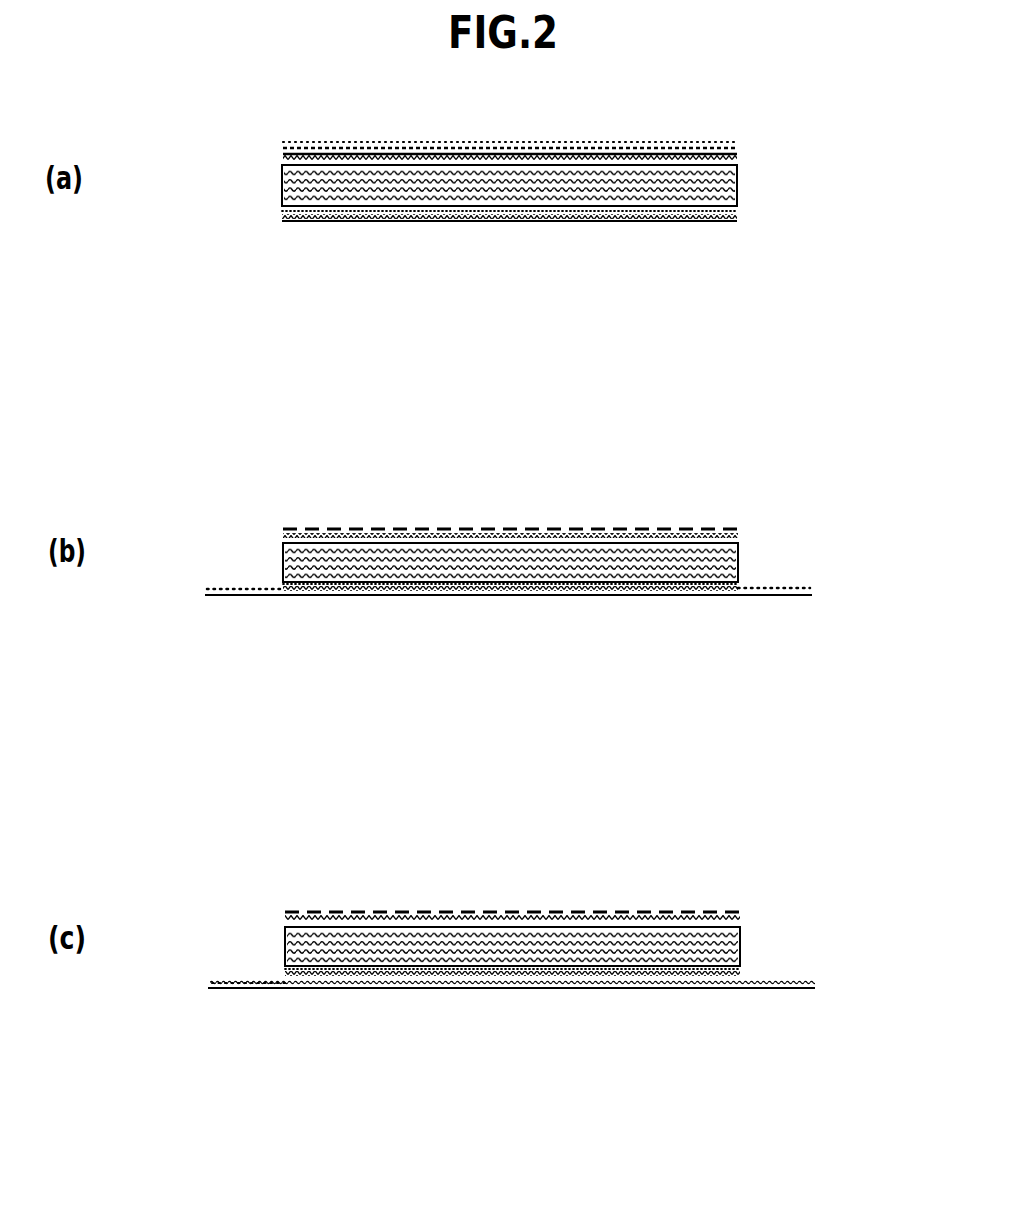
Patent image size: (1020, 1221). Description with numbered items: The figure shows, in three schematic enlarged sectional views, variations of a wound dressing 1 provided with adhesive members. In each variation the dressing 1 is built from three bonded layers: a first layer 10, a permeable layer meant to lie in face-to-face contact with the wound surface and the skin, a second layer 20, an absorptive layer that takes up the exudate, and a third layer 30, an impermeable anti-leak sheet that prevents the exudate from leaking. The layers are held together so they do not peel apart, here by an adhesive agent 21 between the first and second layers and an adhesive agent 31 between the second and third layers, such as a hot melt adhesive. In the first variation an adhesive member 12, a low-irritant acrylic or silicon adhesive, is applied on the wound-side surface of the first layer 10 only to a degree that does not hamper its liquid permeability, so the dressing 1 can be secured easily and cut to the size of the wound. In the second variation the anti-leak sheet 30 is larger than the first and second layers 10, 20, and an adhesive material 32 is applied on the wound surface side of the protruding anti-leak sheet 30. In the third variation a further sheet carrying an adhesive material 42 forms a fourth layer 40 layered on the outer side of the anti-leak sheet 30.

The dressing 1 is at (773, 132).
The first layer (permeable layer) 10 is at (610, 151).
The adhesive member 12 is at (693, 148).
The second layer (absorptive layer) 20 is at (737, 180).
The adhesive agent 21 is at (348, 158).
The third layer (impermeable layer / anti-leak sheet) 30 is at (667, 222).
The adhesive agent 31 is at (403, 217).
The adhesive material 32 is at (226, 586).
The fourth layer 40 is at (792, 989).
The adhesive material 42 is at (800, 982).